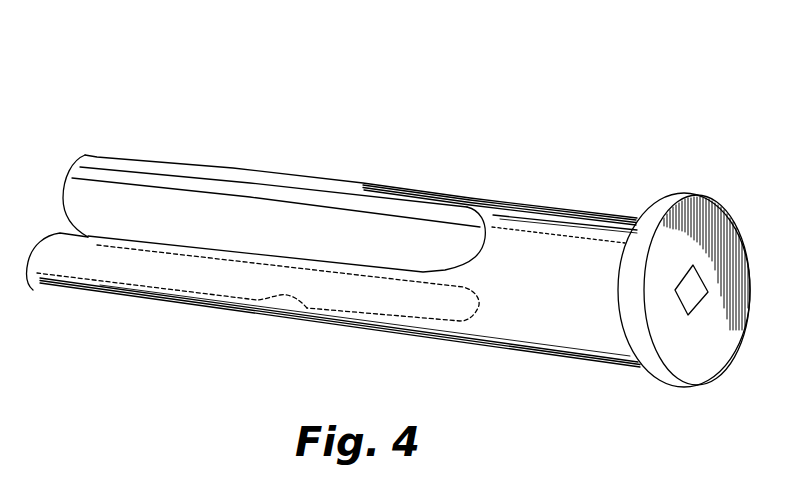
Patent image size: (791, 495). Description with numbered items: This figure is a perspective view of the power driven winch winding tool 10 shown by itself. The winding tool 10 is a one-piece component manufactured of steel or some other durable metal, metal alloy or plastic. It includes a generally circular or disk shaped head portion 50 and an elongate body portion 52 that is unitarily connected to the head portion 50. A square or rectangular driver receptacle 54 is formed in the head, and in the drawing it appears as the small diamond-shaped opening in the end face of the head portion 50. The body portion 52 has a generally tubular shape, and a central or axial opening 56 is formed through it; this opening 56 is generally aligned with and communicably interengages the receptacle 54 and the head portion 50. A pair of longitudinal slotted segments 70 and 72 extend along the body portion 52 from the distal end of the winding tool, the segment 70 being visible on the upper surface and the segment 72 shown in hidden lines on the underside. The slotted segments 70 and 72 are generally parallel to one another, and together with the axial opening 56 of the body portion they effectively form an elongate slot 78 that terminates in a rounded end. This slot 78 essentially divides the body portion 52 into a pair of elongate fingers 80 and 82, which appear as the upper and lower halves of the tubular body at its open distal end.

The winding tool 10 is at (503, 103).
The head portion 50 is at (727, 207).
The body portion 52 is at (567, 208).
The driver receptacle 54 is at (682, 306).
The axial opening 56 is at (547, 340).
The longitudinal slotted segment 70 is at (250, 228).
The longitudinal slotted segment 72 is at (270, 298).
The elongate slot 78 is at (383, 237).
The elongate finger 80 is at (97, 156).
The elongate finger 82 is at (28, 290).